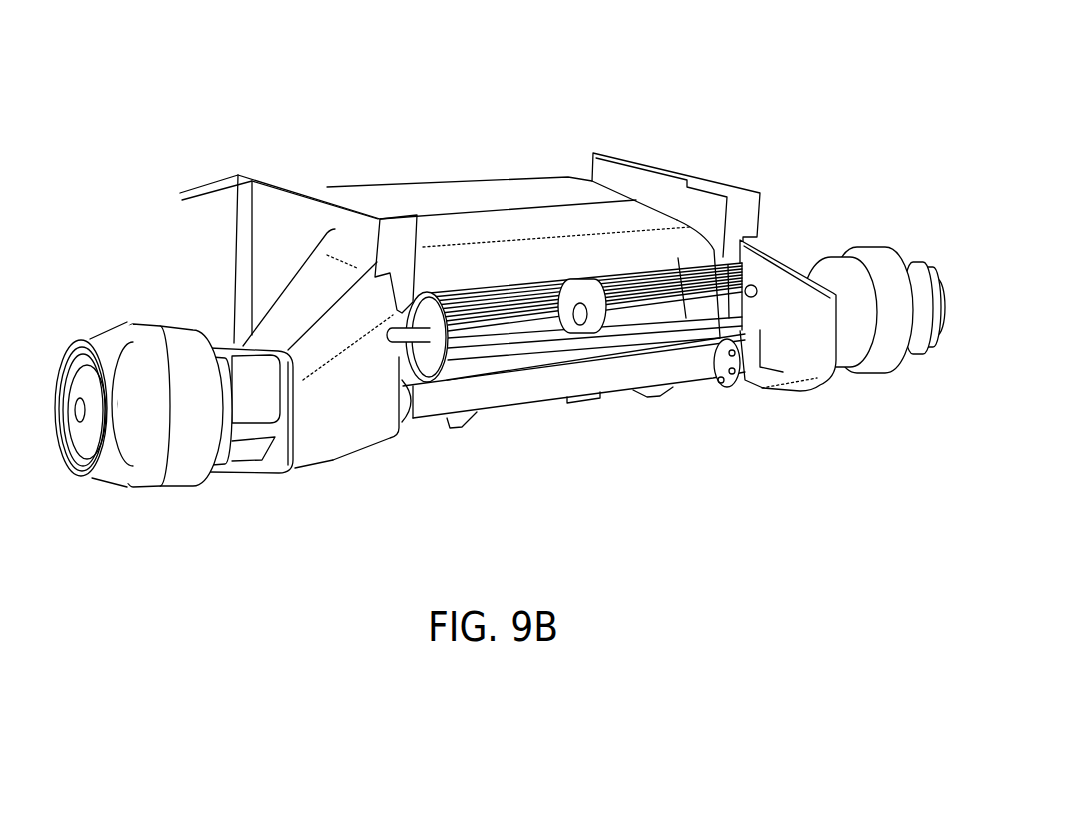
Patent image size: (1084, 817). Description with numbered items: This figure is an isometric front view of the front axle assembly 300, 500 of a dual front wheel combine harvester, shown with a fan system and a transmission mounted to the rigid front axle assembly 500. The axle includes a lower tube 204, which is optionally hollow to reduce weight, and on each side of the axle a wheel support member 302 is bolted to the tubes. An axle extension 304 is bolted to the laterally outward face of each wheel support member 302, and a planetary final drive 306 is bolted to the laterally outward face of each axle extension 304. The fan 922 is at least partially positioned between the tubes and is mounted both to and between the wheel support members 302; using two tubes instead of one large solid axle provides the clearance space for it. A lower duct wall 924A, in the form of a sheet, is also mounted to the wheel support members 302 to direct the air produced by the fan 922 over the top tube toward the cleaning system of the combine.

The front axle assembly 300 is at (693, 90).
The rigid front axle assembly 500 is at (174, 425).
The wheel support member 302 is at (278, 200).
The axle extension 304 is at (247, 380).
The planetary final drive 306 is at (130, 480).
The lower tube 204 is at (502, 390).
The fan 922 is at (607, 322).
The lower duct wall 924A is at (505, 193).